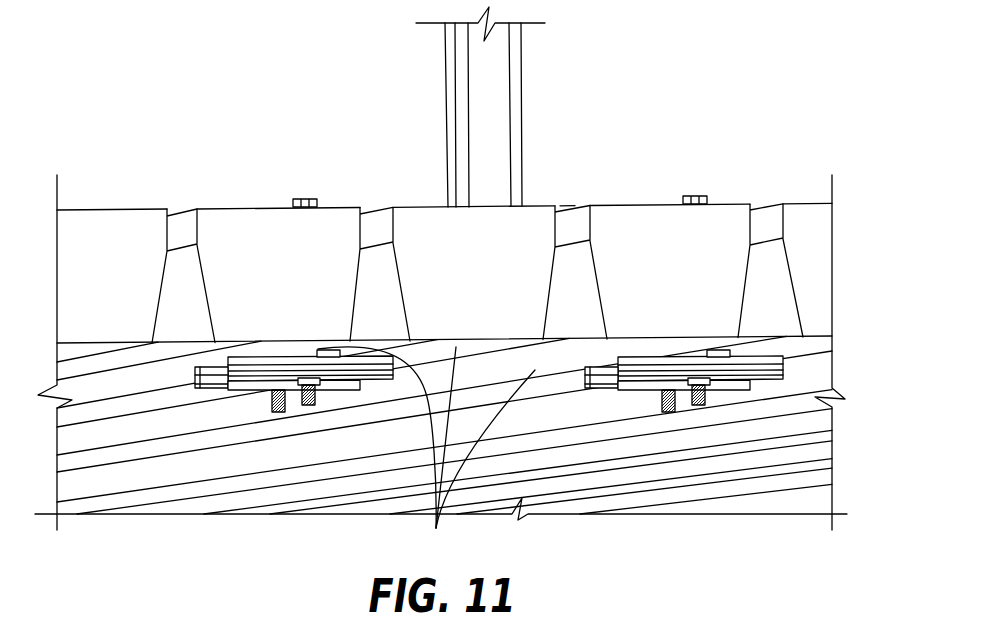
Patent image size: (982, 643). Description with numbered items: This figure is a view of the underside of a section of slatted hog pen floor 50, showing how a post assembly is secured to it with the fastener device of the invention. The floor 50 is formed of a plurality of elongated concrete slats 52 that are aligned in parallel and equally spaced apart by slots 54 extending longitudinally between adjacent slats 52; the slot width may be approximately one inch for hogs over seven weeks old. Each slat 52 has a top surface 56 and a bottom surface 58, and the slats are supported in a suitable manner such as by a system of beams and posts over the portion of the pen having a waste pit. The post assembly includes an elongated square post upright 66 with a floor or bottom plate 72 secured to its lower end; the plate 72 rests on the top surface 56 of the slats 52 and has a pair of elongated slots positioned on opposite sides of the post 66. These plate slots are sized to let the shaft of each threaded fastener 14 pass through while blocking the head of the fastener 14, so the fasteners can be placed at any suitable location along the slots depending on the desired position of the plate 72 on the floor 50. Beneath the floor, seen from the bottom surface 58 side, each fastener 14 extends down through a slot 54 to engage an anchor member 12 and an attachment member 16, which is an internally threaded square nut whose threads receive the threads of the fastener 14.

The hog pen floor 50 is at (131, 176).
The concrete slats 52 is at (88, 266).
The slots 54 is at (770, 312).
The top surface 56 is at (352, 207).
The post upright 66 is at (502, 97).
The bottom plate 72 is at (567, 205).
The threaded fastener 14 is at (293, 207).
The anchor member 12 is at (210, 389).
The attachment member 16 is at (284, 392).
The bottom surface 58 is at (436, 528).